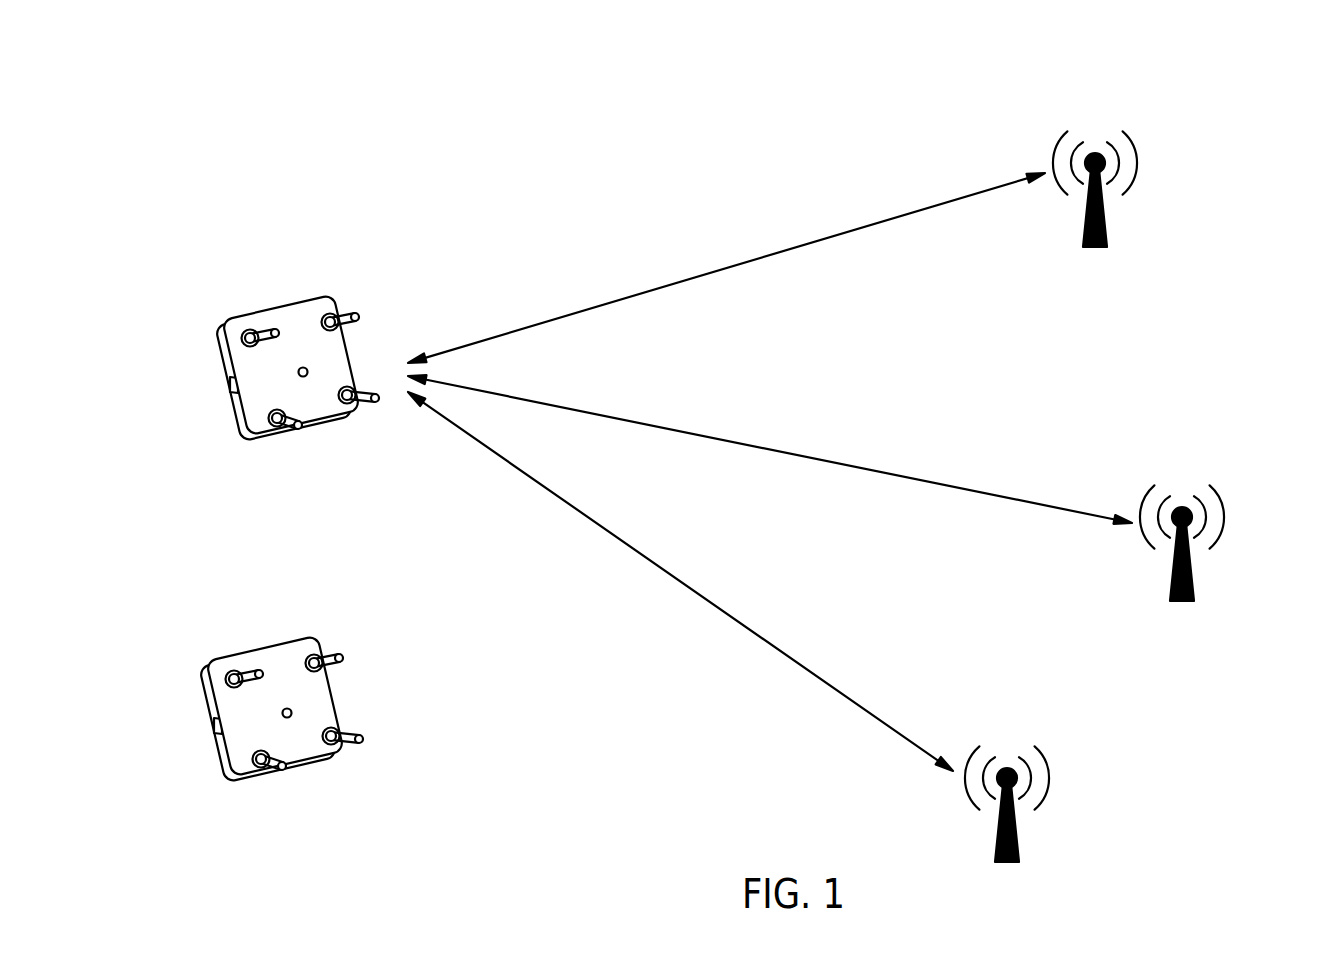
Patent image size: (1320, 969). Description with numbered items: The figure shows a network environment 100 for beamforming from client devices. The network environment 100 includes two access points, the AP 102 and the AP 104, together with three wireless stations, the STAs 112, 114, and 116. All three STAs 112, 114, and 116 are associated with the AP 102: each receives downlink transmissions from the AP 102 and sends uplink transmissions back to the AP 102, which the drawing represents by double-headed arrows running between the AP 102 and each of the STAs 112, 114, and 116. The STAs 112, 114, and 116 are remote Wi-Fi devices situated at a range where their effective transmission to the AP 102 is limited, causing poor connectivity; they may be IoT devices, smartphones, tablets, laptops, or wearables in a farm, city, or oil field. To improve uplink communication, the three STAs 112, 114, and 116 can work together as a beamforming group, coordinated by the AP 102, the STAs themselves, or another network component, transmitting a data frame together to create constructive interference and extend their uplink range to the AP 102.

The network environment 100 is at (250, 82).
The access point 102 is at (272, 303).
The access point 104 is at (256, 646).
The wireless station 112 is at (1105, 225).
The wireless station 114 is at (1192, 579).
The wireless station 116 is at (1017, 840).